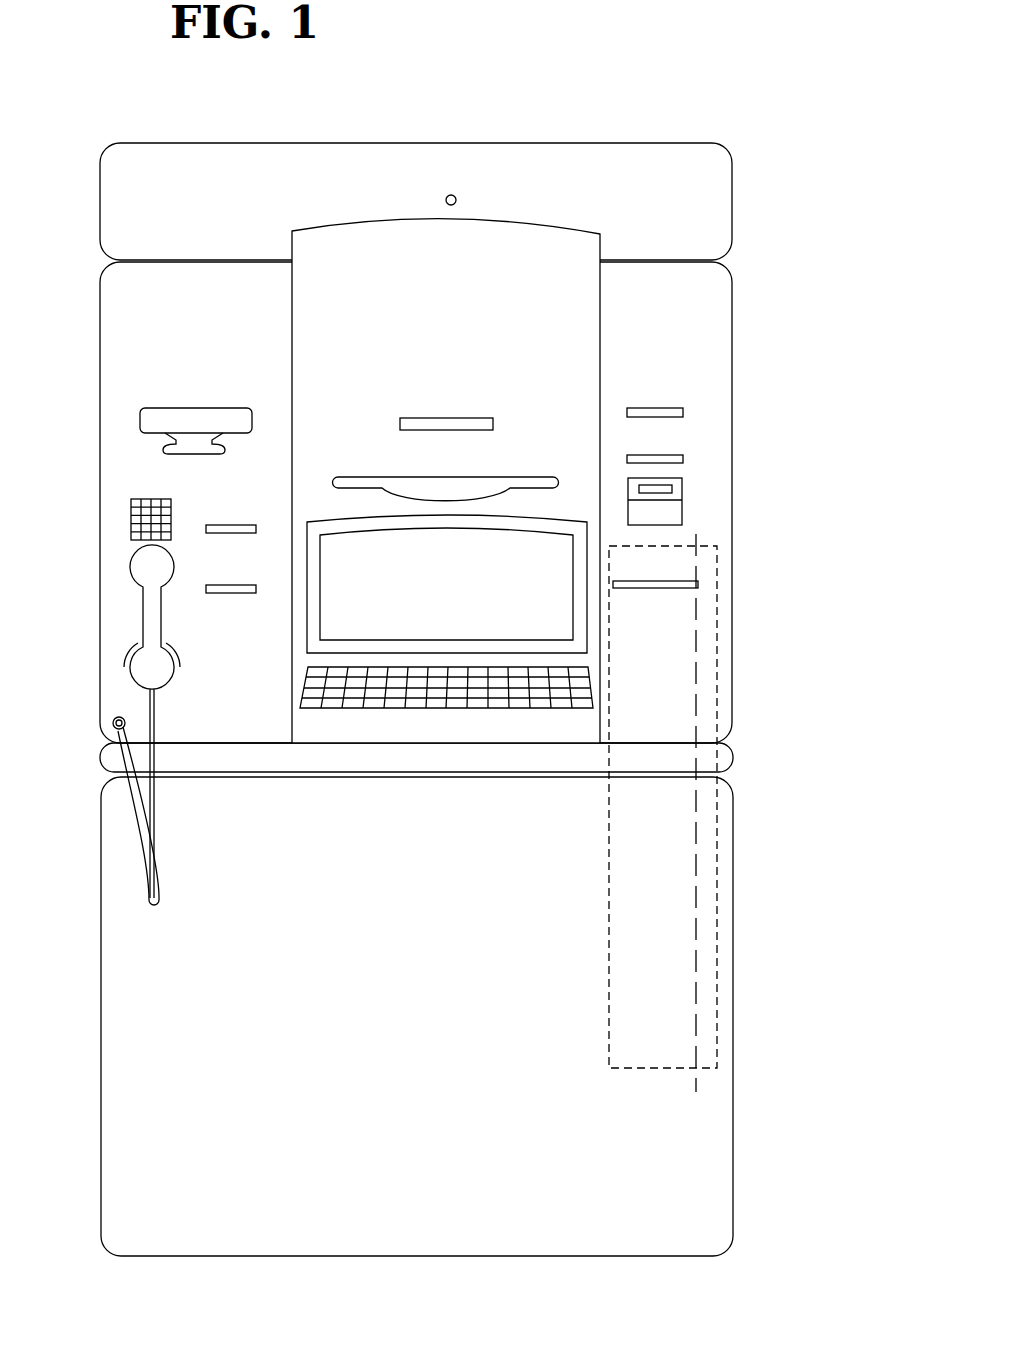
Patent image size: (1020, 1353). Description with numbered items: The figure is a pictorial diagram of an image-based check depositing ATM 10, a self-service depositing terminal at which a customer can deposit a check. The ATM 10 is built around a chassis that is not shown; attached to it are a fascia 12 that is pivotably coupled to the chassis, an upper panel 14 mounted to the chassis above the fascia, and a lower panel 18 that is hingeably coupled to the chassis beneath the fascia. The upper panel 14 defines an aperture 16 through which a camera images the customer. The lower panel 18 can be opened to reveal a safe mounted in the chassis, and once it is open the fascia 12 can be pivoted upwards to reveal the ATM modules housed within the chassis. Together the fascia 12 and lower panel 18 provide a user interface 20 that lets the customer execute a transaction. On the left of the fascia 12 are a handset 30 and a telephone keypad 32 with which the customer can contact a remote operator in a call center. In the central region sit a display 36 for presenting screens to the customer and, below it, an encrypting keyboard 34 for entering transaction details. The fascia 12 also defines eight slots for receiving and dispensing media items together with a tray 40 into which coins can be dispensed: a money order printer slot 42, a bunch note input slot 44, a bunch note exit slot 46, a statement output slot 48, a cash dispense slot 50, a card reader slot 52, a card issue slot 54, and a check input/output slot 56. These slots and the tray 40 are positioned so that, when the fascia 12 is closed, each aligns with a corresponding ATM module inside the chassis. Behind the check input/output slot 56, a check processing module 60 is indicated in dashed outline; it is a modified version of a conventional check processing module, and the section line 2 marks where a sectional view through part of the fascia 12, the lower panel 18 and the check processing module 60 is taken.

The section line 2 is at (706, 534).
The image-based check depositing ATM 10 is at (689, 56).
The fascia 12 is at (123, 317).
The upper panel 14 is at (710, 198).
The aperture 16 is at (456, 197).
The lower panel 18 is at (124, 1160).
The user interface 20 is at (440, 806).
The handset 30 is at (143, 618).
The telephone keypad 32 is at (143, 514).
The encrypting keyboard 34 is at (330, 680).
The display 36 is at (465, 591).
The tray 40 is at (682, 490).
The money order printer slot 42 is at (195, 420).
The bunch note input slot 44 is at (226, 525).
The bunch note exit slot 46 is at (226, 593).
The statement output slot 48 is at (460, 418).
The cash dispense slot 50 is at (441, 492).
The card reader slot 52 is at (672, 407).
The card issue slot 54 is at (683, 458).
The check input/output slot 56 is at (665, 590).
The check processing module 60 is at (717, 898).